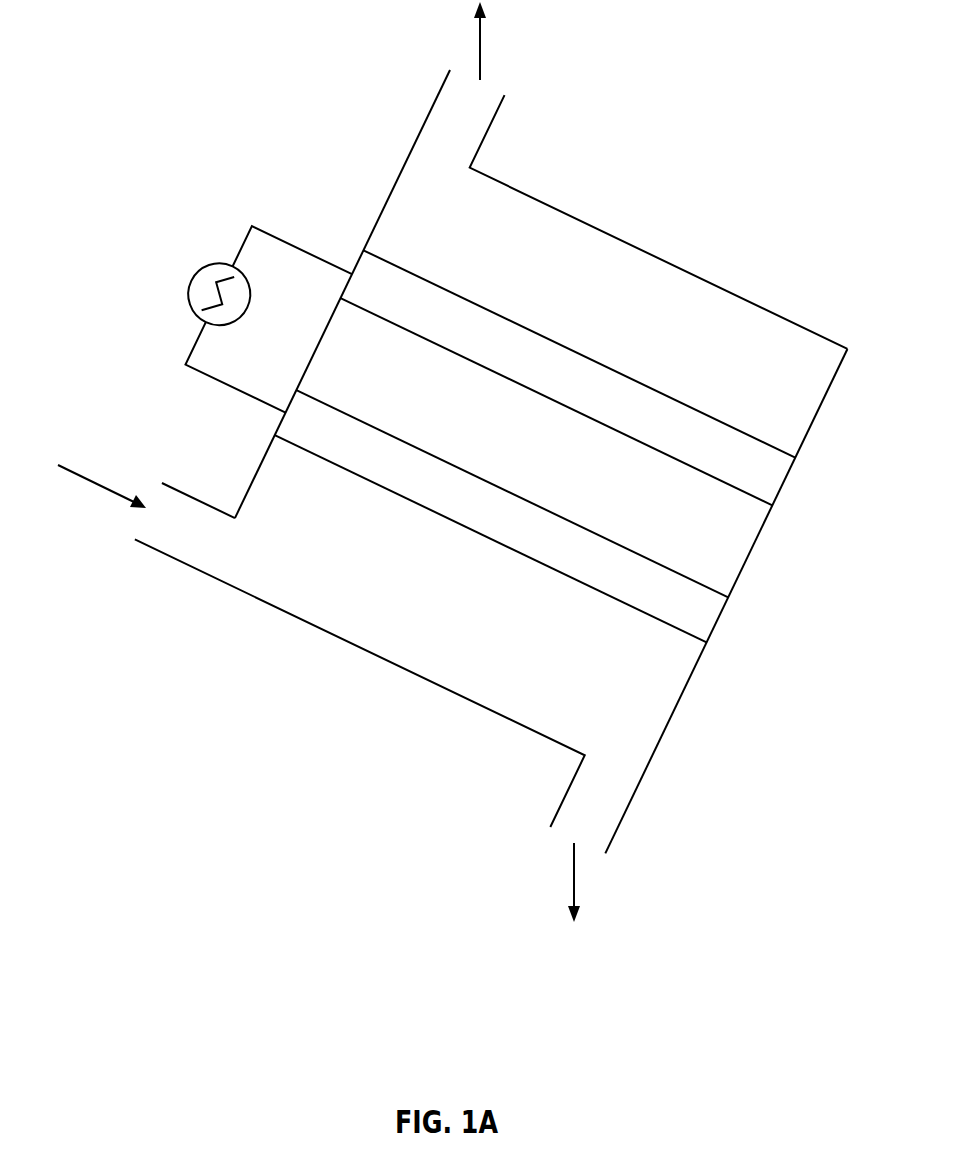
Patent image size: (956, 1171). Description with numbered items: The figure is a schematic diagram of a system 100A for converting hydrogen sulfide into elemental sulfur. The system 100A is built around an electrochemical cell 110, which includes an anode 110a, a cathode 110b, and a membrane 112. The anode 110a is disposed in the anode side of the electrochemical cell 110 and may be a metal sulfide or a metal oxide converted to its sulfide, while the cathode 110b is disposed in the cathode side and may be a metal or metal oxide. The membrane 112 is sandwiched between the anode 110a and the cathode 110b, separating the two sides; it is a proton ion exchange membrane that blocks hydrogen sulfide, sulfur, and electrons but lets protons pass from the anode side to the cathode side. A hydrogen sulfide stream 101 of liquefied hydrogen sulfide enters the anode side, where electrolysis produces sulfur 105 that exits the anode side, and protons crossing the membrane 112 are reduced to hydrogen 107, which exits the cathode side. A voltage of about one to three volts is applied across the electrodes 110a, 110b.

The system 100A is at (476, 1080).
The hydrogen sulfide stream 101 is at (88, 482).
The sulfur 105 is at (576, 893).
The hydrogen 107 is at (480, 58).
The electrochemical cell 110 is at (701, 185).
The anode 110a is at (280, 425).
The cathode 110b is at (362, 266).
The membrane 112 is at (768, 543).